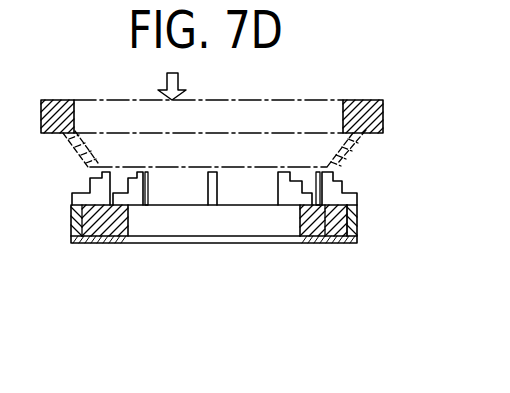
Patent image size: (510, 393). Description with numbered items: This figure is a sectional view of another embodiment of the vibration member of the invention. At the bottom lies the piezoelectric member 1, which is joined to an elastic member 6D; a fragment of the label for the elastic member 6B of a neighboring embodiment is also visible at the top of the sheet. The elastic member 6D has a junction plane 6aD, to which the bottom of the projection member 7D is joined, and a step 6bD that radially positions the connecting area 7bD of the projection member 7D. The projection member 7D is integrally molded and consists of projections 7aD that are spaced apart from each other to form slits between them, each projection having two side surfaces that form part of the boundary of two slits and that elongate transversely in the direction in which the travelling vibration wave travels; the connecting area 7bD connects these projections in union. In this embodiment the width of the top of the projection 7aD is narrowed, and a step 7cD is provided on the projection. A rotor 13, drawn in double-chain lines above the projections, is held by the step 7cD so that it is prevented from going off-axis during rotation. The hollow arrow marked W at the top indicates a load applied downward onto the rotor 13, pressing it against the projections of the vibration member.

The piezoelectric member 1 is at (316, 243).
The rotor 13 is at (367, 102).
The load W is at (179, 78).
The elastic member 6B is at (314, 11).
The elastic member 6D is at (99, 259).
The step 6bD is at (74, 244).
The junction plane 6aD is at (137, 237).
The projection member 7D is at (361, 263).
The step 7cD is at (318, 244).
The connecting area 7bD is at (345, 244).
The projection 7aD is at (340, 182).